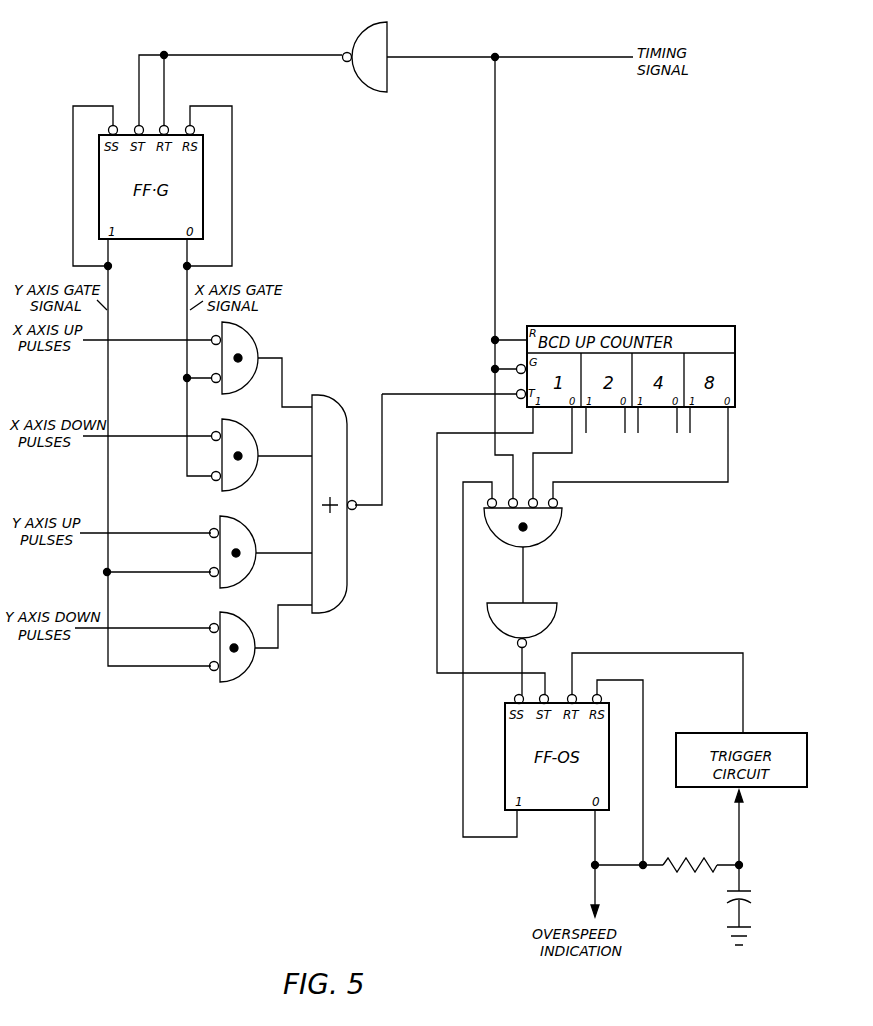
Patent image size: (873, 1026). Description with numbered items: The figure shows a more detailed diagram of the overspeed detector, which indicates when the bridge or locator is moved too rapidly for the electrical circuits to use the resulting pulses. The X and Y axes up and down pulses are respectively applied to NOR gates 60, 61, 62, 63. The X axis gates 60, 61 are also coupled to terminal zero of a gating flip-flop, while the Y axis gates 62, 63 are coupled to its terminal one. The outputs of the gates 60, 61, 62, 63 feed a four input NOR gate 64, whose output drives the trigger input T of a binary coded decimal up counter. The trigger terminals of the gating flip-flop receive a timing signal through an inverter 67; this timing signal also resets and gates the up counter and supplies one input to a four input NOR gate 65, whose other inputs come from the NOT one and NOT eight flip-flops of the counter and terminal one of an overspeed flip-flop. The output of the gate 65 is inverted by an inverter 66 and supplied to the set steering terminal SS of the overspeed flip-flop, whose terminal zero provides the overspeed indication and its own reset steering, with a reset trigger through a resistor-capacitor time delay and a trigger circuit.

The NOR gate 60 is at (253, 336).
The NOR gate 61 is at (251, 432).
The NOR gate 62 is at (254, 531).
The NOR gate 63 is at (254, 627).
The four input NOR gate 64 is at (333, 392).
The four input NOR gate 65 is at (570, 515).
The inverter 66 is at (560, 611).
The inverter 67 is at (392, 36).